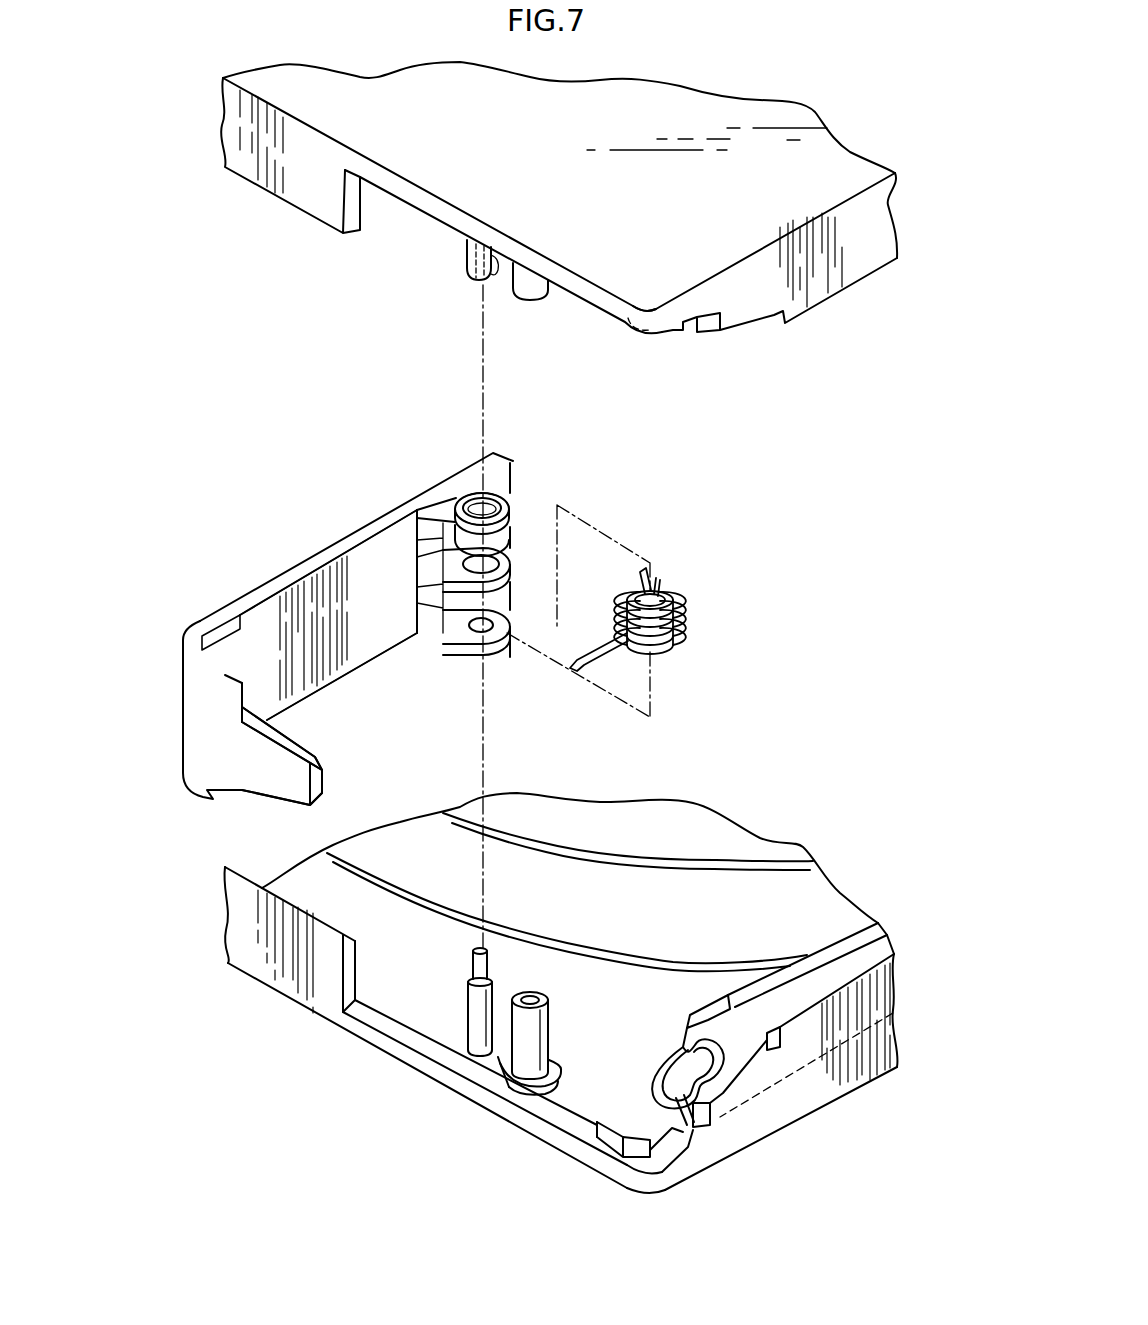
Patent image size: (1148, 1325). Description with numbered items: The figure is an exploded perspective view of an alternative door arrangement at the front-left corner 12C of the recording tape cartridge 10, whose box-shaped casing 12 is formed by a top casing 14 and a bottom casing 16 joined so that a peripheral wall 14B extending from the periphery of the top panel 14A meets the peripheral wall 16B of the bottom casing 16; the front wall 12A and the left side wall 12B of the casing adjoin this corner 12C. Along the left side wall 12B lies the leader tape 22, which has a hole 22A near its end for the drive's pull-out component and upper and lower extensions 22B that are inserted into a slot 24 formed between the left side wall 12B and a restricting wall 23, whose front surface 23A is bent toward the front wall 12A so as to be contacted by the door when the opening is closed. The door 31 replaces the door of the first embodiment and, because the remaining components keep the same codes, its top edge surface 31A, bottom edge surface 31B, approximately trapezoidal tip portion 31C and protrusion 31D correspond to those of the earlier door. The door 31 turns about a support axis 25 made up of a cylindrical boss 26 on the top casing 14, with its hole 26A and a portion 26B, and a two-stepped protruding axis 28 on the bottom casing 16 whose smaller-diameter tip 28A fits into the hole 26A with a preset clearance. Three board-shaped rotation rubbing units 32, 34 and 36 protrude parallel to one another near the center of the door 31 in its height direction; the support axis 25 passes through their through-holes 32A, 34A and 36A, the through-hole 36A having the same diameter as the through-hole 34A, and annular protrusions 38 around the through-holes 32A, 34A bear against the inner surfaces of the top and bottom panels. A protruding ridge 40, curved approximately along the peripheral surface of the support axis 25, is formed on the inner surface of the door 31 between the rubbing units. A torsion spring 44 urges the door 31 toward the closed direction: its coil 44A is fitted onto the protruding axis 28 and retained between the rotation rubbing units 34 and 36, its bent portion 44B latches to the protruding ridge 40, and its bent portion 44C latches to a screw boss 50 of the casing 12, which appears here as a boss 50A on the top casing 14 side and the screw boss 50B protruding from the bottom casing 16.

The recording tape cartridge 10 is at (776, 86).
The casing 12 is at (545, 635).
The front wall 12A is at (290, 155).
The left side wall 12B is at (779, 295).
The corner 12C is at (652, 316).
The top casing 14 is at (852, 156).
The top panel 14A is at (640, 112).
The peripheral wall 14B is at (326, 198).
The bottom casing 16 is at (822, 1105).
The peripheral wall 16B is at (272, 980).
The leader tape 22 is at (876, 950).
The hole 22A is at (716, 1082).
The extensions 22B is at (705, 1012).
The restricting wall 23 is at (636, 1146).
The front surface 23A is at (600, 1140).
The slot 24 is at (626, 315).
The support axis 25 is at (445, 290).
The cylindrical boss 26 is at (466, 258).
The hole 26A is at (470, 286).
The step of upper pivot pin 26B is at (487, 292).
The protruding axis 28 is at (470, 1010).
The tip 28A is at (488, 962).
The door 31 is at (203, 729).
The top plate of shutter 31A is at (302, 566).
The side plate of shutter 31B is at (300, 700).
The bottom flange of shutter 31C is at (325, 788).
The ledge of shutter 31D is at (226, 638).
The rotation rubbing unit 32 is at (511, 518).
The through-hole 32A is at (500, 503).
The rotation rubbing unit 34 is at (502, 646).
The through-hole 34A is at (480, 633).
The rotation rubbing unit 36 is at (513, 576).
The through-hole 36A is at (474, 588).
The annular protrusion 38 is at (474, 500).
The protruding ridge 40 is at (430, 598).
The torsion spring 44 is at (673, 588).
The coil 44A is at (673, 600).
The bent portion 44B is at (641, 579).
The bent portion 44C is at (572, 660).
The screw boss 50 is at (576, 315).
The upper positioning boss 50A is at (540, 298).
The screw boss 50B is at (544, 1030).